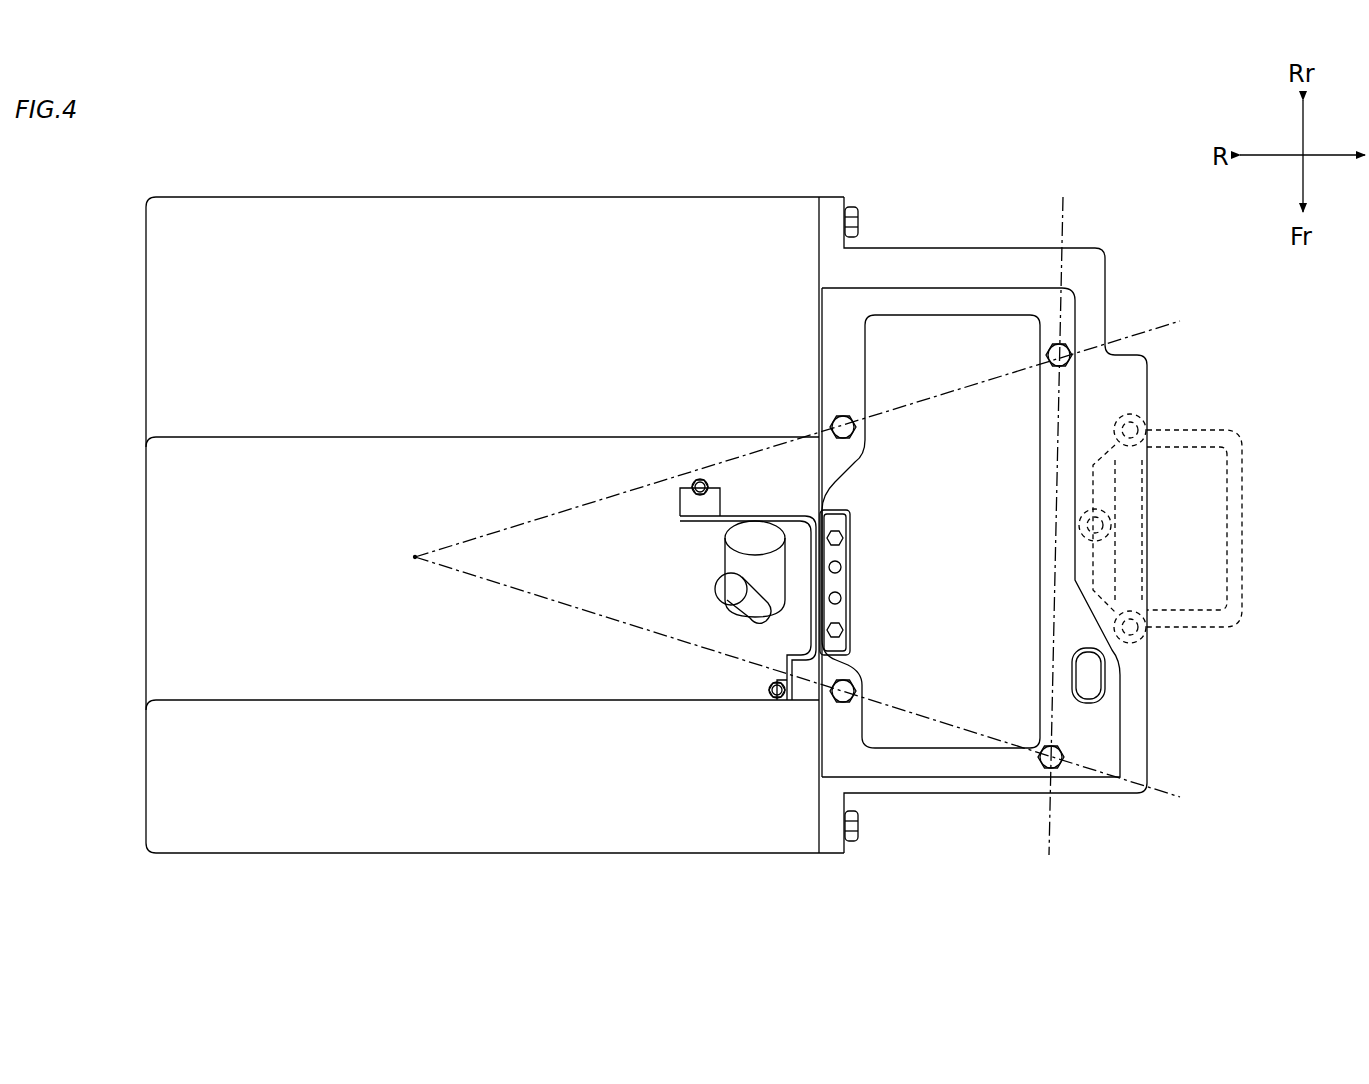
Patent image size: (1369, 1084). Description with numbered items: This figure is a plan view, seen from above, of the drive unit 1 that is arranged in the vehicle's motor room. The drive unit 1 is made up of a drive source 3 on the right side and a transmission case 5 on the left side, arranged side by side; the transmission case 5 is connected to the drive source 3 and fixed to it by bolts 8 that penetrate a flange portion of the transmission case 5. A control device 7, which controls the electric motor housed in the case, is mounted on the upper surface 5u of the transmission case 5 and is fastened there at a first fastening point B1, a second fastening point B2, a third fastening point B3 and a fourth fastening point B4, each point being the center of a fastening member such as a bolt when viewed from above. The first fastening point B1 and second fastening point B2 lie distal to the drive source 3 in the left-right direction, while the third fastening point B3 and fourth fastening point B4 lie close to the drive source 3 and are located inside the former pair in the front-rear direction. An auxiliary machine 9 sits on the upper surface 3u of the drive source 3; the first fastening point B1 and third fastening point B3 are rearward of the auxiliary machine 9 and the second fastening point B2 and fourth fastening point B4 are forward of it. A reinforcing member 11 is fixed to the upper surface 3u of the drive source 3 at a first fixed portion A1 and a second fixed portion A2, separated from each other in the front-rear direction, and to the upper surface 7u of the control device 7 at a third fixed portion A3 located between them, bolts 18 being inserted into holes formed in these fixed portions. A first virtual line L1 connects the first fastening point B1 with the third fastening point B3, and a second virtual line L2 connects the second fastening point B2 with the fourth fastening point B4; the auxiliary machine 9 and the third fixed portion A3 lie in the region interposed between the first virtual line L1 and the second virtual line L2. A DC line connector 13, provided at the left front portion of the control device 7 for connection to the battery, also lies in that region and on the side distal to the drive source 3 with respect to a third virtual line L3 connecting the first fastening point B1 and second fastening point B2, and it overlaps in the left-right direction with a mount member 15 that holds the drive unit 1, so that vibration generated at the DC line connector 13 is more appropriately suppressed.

The drive unit 1 is at (727, 142).
The drive source 3 is at (234, 862).
The upper surface of the drive source 3u is at (325, 497).
The transmission case 5 is at (1158, 669).
The upper surface of the transmission case 5u is at (1124, 396).
The control device 7 is at (945, 780).
The upper surface of the control device 7u is at (915, 366).
The bolts 8 is at (860, 218).
The auxiliary machine 9 is at (728, 592).
The reinforcing member 11 is at (692, 526).
The DC line connector 13 is at (1106, 690).
The mount member 15 is at (1250, 546).
The bolts 18 is at (705, 480).
The first fixed portion A1 is at (685, 510).
The second fixed portion A2 is at (786, 700).
The third fixed portion A3 is at (846, 580).
The first fastening point B1 is at (1070, 348).
The second fastening point B2 is at (1060, 772).
The third fastening point B3 is at (843, 415).
The fourth fastening point B4 is at (845, 703).
The first virtual line L1 is at (560, 500).
The second virtual line L2 is at (930, 730).
The third virtual line L3 is at (1050, 836).